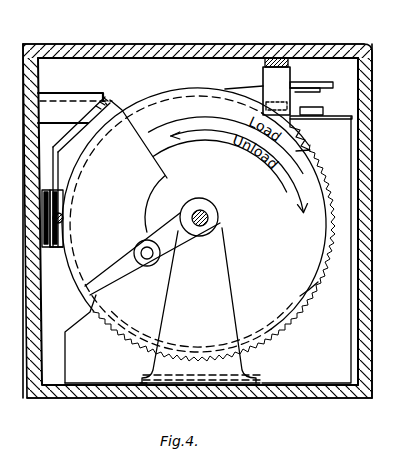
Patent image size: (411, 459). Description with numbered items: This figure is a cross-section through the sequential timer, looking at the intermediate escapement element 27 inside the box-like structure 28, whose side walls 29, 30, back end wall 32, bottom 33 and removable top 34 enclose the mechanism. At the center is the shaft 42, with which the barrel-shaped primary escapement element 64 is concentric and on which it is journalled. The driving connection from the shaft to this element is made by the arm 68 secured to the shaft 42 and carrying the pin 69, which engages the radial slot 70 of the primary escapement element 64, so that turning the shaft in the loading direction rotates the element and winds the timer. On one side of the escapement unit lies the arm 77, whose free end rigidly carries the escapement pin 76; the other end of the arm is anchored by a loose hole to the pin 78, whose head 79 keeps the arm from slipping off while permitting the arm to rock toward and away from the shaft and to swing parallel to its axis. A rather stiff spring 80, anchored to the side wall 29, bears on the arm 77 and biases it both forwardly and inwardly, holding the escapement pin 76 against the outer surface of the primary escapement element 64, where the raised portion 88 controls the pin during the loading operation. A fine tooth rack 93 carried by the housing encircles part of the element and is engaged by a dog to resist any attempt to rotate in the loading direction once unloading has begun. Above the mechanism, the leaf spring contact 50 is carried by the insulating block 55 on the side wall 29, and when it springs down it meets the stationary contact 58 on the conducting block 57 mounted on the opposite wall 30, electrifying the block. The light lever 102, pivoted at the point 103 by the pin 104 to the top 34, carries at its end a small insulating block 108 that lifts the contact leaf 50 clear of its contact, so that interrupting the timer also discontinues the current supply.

The intermediate escapement element 27 is at (295, 353).
The box-like structure 28 is at (261, 42).
The side wall 29 is at (21, 331).
The side wall 30 is at (365, 200).
The back end wall 32 is at (97, 72).
The bottom 33 is at (333, 393).
The removable top 34 is at (207, 50).
The shaft 42 is at (209, 218).
The leaf spring contact 50 is at (305, 86).
The insulating block 55 is at (62, 92).
The conducting block 57 is at (354, 117).
The stationary contact 58 is at (305, 110).
The primary escapement element 64 is at (194, 220).
The arm 68 is at (183, 247).
The pin 69 is at (146, 268).
The radial slot 70 is at (107, 318).
The escapement pin 76 is at (105, 105).
The arm 77 is at (50, 150).
The pin 78 is at (51, 250).
The head 79 is at (64, 218).
The spring 80 is at (41, 192).
The raised portion 88 is at (283, 325).
The fine tooth rack 93 is at (313, 288).
The light lever 102 is at (265, 67).
The pivot point 103 is at (248, 92).
The pin 104 is at (277, 62).
The insulating block 108 is at (256, 113).